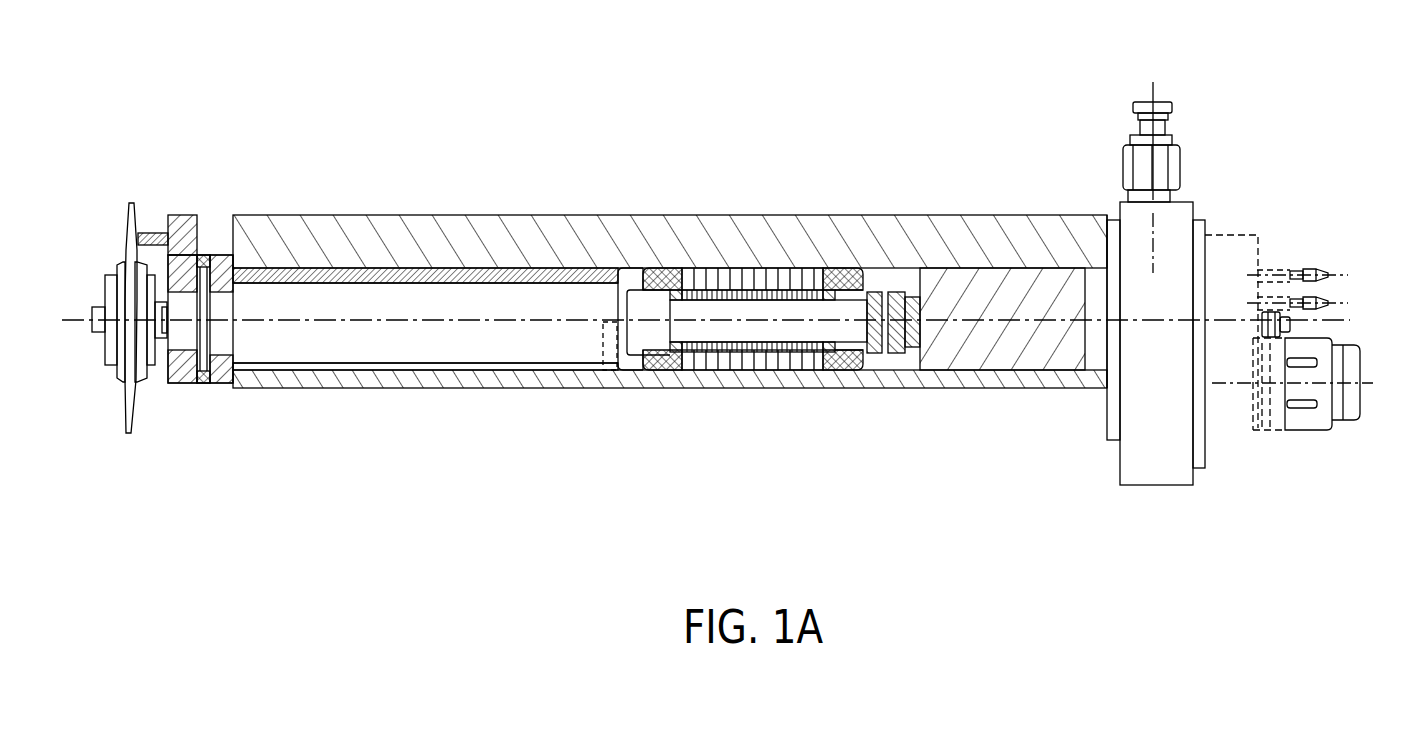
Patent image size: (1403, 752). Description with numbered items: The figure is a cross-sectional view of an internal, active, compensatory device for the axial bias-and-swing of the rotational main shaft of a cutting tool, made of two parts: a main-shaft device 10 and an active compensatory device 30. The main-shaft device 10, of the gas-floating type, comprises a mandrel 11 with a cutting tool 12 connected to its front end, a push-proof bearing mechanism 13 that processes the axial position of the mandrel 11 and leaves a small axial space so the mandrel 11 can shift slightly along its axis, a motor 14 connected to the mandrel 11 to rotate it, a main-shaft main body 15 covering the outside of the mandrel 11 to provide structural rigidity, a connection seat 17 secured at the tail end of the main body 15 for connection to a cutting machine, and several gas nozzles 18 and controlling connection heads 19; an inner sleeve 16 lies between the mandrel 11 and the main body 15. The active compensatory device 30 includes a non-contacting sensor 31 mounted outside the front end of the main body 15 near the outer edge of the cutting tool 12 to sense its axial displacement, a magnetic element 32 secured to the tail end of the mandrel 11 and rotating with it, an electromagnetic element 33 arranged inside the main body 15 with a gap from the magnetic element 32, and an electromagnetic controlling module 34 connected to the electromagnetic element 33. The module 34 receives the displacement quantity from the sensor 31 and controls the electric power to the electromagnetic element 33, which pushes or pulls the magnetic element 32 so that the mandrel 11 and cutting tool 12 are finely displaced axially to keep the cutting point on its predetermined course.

The main-shaft device 10 is at (117, 83).
The mandrel 11 is at (375, 303).
The cutting tool 12 is at (134, 215).
The push-proof bearing mechanism 13 is at (226, 262).
The motor 14 is at (700, 273).
The main-shaft main body 15 is at (301, 226).
The inner sleeve 16 is at (470, 363).
The connection seat 17 is at (1130, 220).
The gas nozzles 18 is at (1282, 267).
The controlling connection heads 19 is at (1323, 350).
The active compensatory device 30 is at (1002, 468).
The sensor 31 is at (153, 247).
The magnetic element 32 is at (867, 390).
The electromagnetic element 33 is at (900, 390).
The electromagnetic controlling module 34 is at (985, 368).